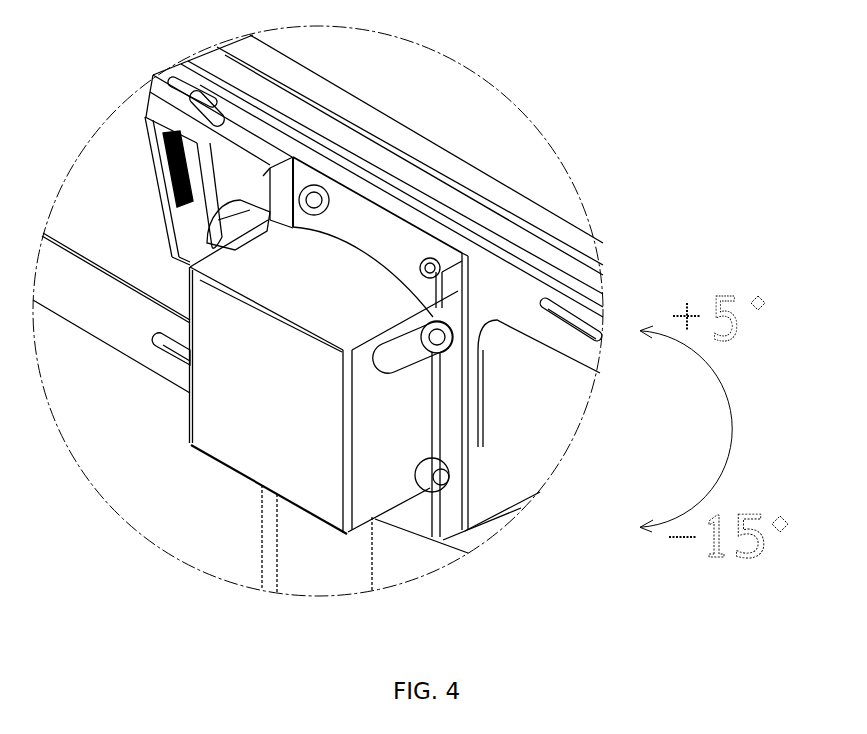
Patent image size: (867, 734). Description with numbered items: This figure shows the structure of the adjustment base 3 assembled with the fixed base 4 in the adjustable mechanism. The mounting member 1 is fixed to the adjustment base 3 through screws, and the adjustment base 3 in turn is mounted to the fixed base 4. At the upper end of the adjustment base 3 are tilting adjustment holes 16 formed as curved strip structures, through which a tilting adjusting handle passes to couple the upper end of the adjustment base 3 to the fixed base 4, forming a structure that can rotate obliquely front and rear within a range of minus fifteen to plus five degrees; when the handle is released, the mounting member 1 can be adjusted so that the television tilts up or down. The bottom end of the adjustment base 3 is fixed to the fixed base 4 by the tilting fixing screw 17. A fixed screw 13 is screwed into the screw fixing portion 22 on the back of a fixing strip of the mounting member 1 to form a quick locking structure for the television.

The mounting member 1 is at (131, 333).
The adjustment base 3 is at (460, 287).
The fixed base 4 is at (257, 422).
The fixed screw 13 is at (172, 213).
The tilting adjustment hole 16 is at (412, 350).
The tilting fixing screw 17 is at (484, 350).
The screw fixing portion 22 is at (150, 120).